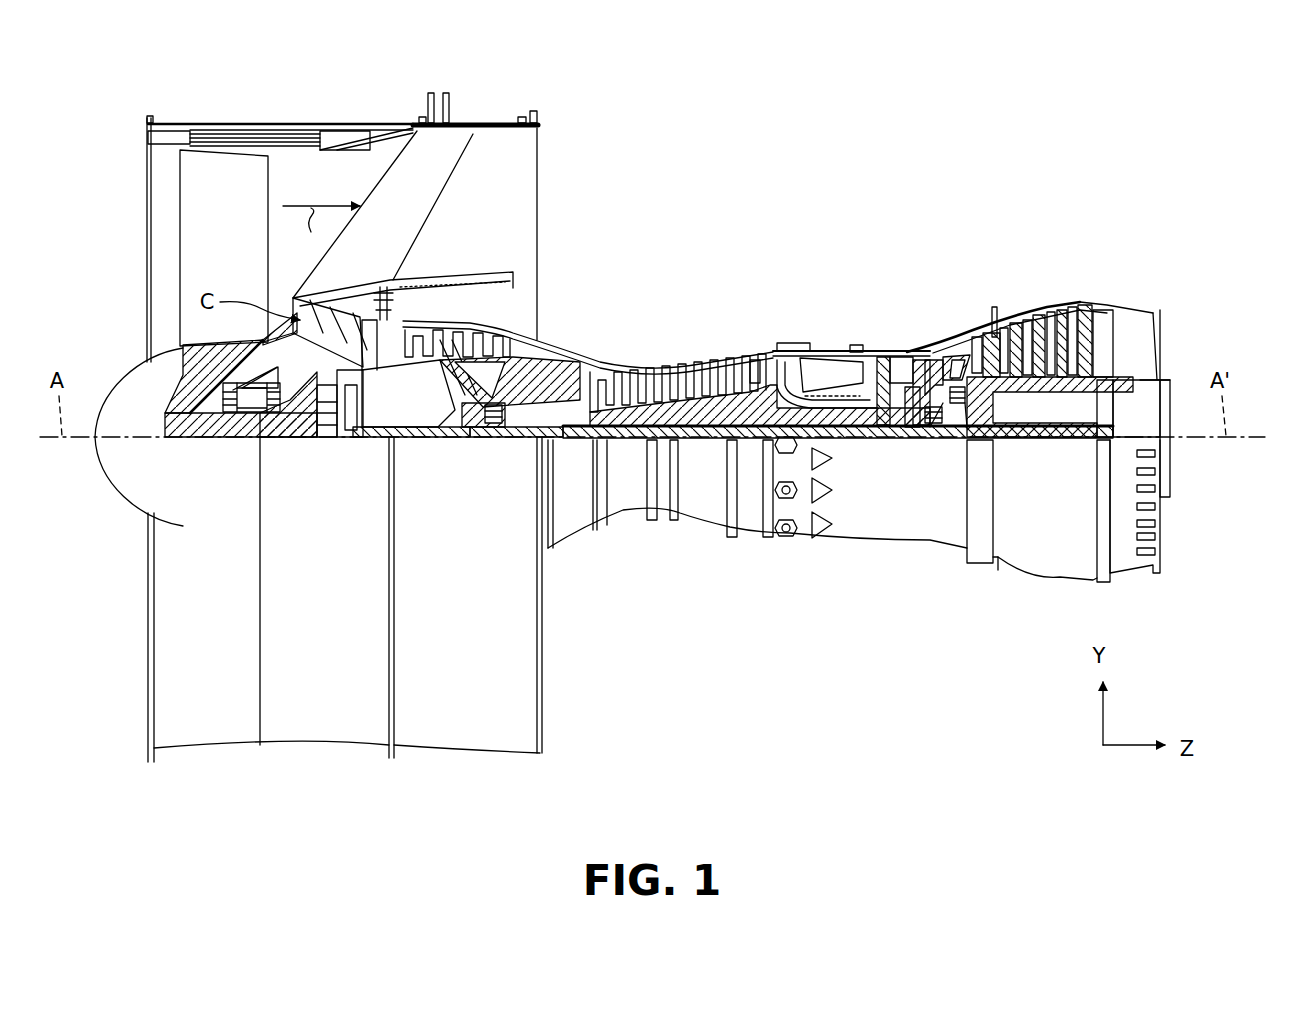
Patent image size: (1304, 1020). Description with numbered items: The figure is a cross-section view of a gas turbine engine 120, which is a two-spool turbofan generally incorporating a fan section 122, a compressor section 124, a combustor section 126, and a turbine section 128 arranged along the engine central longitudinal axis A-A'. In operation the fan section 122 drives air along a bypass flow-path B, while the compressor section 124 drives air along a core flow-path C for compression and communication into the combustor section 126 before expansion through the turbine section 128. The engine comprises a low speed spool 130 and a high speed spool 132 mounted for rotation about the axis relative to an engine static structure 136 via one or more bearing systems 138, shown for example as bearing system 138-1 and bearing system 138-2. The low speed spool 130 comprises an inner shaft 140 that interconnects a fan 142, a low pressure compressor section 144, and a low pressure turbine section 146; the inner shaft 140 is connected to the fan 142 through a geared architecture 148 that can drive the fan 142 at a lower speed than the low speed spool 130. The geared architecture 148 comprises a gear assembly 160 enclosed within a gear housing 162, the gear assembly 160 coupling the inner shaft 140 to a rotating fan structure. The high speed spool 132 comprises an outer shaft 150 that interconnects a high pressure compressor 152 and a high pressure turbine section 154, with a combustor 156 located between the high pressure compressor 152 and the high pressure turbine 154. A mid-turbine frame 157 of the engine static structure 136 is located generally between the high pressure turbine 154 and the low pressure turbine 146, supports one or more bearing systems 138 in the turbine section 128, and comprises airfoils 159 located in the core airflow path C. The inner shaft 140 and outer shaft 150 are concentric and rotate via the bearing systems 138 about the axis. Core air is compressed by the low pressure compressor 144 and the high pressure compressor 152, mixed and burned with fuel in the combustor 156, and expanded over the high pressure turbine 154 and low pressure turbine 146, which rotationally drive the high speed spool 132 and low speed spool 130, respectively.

The gas turbine engine 120 is at (671, 138).
The fan section 122 is at (389, 100).
The compressor section 124 is at (395, 233).
The combustor section 126 is at (778, 234).
The turbine section 128 is at (1101, 234).
The low speed spool 130 is at (713, 452).
The high speed spool 132 is at (750, 405).
The engine static structure 136 is at (748, 520).
The bearing system 138 is at (943, 427).
The bearing system 138-1 is at (232, 418).
The bearing system 138-2 is at (480, 415).
The inner shaft 140 is at (565, 440).
The fan 142 is at (201, 252).
The low pressure compressor section 144 is at (468, 335).
The low pressure turbine section 146 is at (1033, 327).
The geared architecture 148 is at (350, 447).
The outer shaft 150 is at (830, 420).
The high pressure compressor 152 is at (684, 377).
The high pressure turbine section 154 is at (900, 352).
The combustor 156 is at (823, 374).
The mid-turbine frame 157 is at (940, 367).
The airfoils 159 is at (965, 388).
The gear assembly 160 is at (340, 425).
The gear housing 162 is at (362, 383).